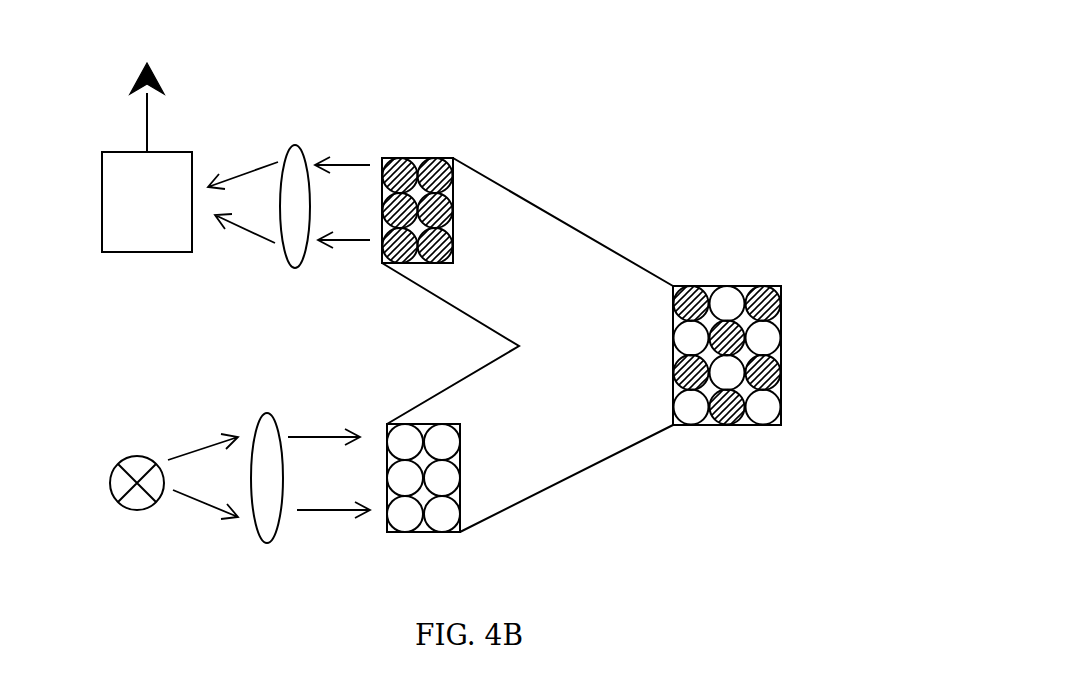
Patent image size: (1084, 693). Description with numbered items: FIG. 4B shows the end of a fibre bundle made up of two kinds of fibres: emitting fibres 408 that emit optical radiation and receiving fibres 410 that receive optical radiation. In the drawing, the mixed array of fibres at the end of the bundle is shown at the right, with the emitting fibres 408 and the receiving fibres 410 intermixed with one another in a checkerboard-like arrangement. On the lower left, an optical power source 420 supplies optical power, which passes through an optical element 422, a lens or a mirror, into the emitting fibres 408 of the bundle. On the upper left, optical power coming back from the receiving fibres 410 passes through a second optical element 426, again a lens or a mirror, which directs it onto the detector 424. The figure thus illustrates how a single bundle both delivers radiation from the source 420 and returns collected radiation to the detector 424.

The emitting fibres 408 is at (746, 340).
The receiving fibres 410 is at (762, 285).
The optical power source 420 is at (137, 456).
The optical element 422 is at (265, 413).
The detector 424 is at (122, 150).
The optical element 426 is at (293, 146).